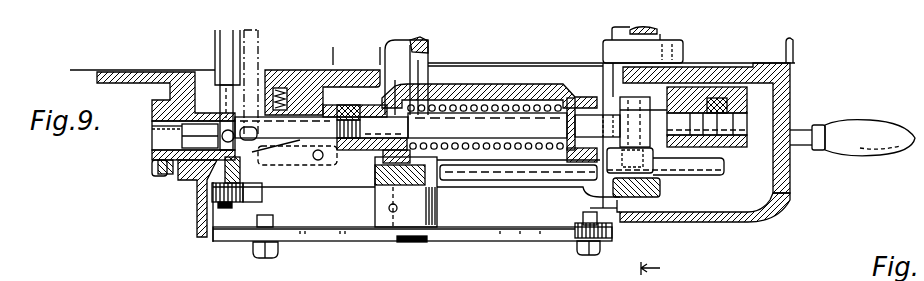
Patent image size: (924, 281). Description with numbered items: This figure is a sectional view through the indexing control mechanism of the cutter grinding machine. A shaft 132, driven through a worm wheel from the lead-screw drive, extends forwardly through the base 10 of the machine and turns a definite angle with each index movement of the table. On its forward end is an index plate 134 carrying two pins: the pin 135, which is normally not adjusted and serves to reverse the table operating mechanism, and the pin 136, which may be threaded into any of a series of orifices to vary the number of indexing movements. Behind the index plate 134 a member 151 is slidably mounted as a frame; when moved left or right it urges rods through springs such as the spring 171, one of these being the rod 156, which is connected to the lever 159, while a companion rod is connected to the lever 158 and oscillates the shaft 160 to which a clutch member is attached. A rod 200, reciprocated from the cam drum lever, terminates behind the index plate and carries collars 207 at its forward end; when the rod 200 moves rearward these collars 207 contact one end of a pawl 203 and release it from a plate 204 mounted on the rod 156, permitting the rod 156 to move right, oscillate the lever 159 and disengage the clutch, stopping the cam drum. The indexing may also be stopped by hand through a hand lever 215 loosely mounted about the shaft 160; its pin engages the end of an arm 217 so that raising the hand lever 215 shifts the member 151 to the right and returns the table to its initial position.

The rod 200 is at (220, 97).
The plate 204 is at (357, 108).
The shaft 132 is at (420, 60).
The member 151 is at (455, 82).
The shaft 160 is at (660, 31).
The rod 156 is at (478, 137).
The spring 171 is at (527, 139).
The lever 159 is at (716, 172).
The hand lever 215 is at (858, 152).
The collars 207 is at (200, 195).
The pawl 203 is at (289, 182).
The arm 217 is at (533, 181).
The lever 158 is at (665, 198).
The pin 136 is at (258, 257).
The index plate 134 is at (328, 242).
The pin 135 is at (588, 248).
The base 10 is at (662, 271).